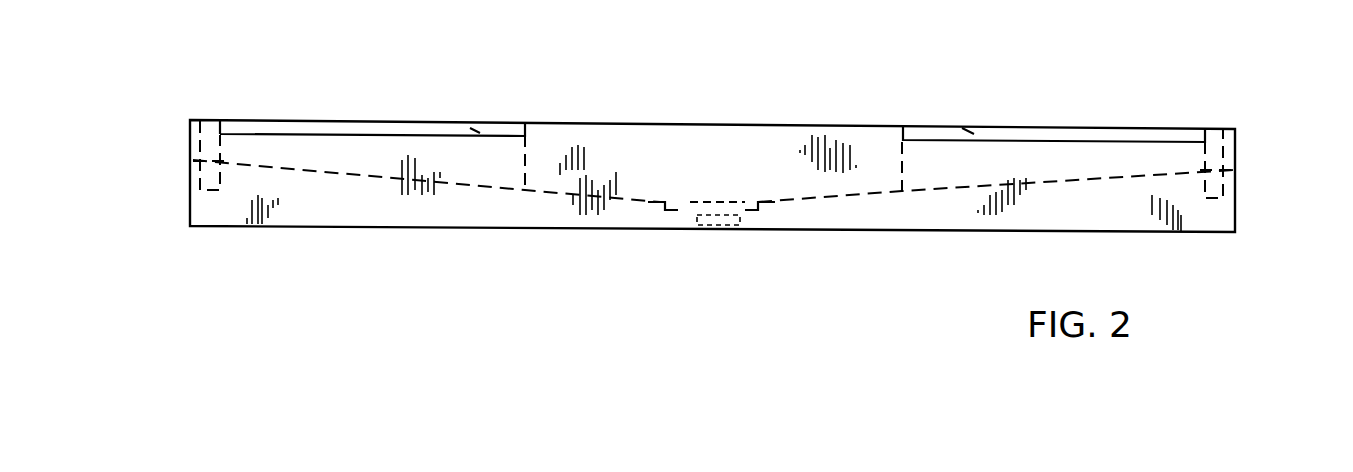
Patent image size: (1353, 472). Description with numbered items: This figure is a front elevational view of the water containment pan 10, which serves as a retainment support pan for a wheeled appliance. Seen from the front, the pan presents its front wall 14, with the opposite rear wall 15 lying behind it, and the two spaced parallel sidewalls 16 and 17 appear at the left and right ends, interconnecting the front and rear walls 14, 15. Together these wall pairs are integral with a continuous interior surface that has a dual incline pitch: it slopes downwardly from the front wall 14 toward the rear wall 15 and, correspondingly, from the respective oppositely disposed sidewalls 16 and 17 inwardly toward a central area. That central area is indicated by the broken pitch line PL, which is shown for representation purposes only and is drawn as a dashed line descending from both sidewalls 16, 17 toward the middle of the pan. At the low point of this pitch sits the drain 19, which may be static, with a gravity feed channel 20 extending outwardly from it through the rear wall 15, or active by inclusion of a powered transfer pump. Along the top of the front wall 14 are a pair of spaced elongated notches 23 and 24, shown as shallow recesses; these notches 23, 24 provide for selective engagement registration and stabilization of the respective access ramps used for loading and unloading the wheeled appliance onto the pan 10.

The water containment pan 10 is at (1164, 74).
The front wall 14 is at (345, 215).
The rear wall 15 is at (476, 131).
The sidewall 16 is at (186, 163).
The sidewall 17 is at (1240, 170).
The drain 19 is at (757, 232).
The gravity feed channel 20 is at (697, 232).
The elongated notch 23 is at (372, 135).
The elongated notch 24 is at (1090, 140).
The broken pitch line PL is at (701, 222).